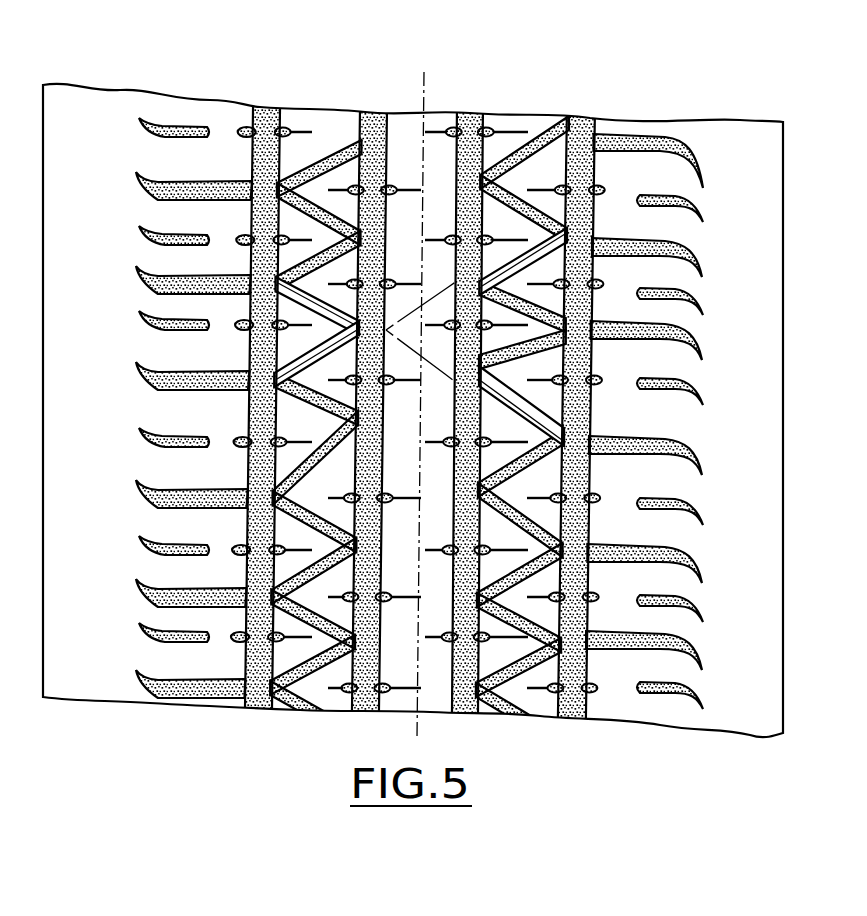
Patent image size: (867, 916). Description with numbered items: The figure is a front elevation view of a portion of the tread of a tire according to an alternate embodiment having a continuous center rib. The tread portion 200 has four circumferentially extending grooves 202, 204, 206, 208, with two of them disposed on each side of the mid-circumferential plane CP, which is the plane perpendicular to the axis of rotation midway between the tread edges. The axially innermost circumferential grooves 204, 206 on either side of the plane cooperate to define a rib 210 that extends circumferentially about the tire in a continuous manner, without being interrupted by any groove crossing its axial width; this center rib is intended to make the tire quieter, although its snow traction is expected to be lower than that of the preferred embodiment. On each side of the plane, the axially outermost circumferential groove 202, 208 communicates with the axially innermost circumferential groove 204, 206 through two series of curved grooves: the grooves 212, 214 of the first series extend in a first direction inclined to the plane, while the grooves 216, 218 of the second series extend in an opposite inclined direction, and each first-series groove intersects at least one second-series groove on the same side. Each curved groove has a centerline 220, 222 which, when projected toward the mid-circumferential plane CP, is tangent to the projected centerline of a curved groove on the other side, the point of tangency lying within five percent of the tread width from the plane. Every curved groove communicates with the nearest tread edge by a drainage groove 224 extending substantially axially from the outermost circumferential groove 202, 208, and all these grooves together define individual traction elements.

The tread portion 200 is at (198, 72).
The axially outermost circumferential groove 202 is at (276, 108).
The axially innermost circumferential groove 204 is at (372, 112).
The axially innermost circumferential groove 206 is at (470, 113).
The axially outermost circumferential groove 208 is at (588, 118).
The rib 210 is at (432, 125).
The curved groove of first series 212 is at (270, 372).
The curved groove of first series 214 is at (583, 240).
The curved groove of second series 216 is at (275, 291).
The curved groove of second series 218 is at (586, 430).
The centerline of curved groove 220 is at (429, 297).
The centerline of curved groove 222 is at (431, 366).
The drainage groove 224 is at (141, 357).
The mid-circumferential plane CP is at (422, 82).